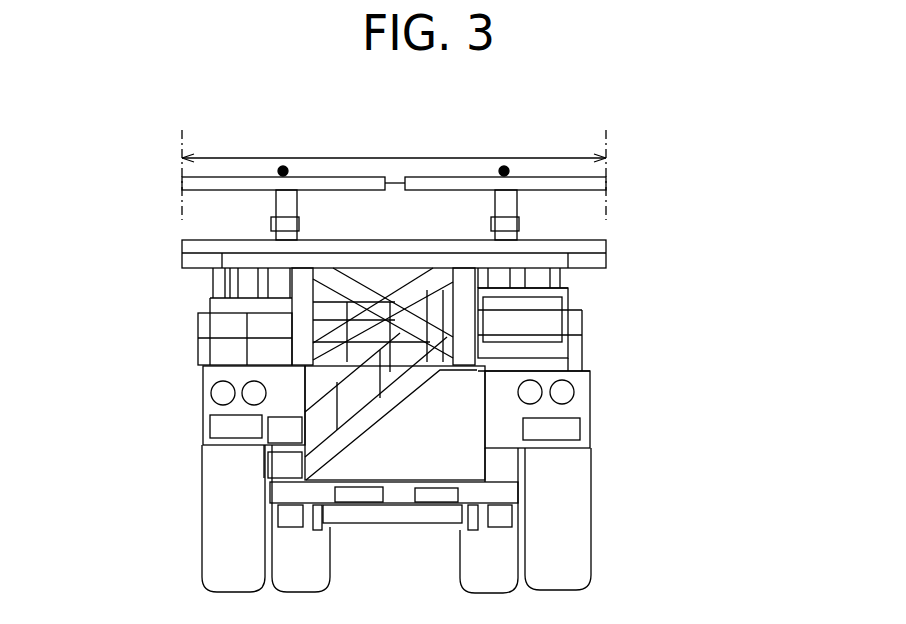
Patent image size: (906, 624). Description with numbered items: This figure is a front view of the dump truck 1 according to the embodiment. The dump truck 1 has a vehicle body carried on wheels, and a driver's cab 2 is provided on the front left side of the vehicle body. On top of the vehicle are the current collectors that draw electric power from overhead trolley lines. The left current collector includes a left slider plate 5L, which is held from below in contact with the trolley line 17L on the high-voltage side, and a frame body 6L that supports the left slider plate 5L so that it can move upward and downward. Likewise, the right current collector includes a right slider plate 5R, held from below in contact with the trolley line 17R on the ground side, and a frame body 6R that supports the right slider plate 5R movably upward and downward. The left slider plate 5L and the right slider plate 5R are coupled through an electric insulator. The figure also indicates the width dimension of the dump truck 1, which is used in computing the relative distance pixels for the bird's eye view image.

The dump truck 1 is at (633, 460).
The driver's cab 2 is at (530, 318).
The right slider plate 5R is at (203, 188).
The left slider plate 5L is at (573, 180).
The frame body 6R is at (277, 208).
The frame body 6L is at (510, 208).
The trolley line 17R is at (278, 168).
The trolley line 17L is at (503, 167).